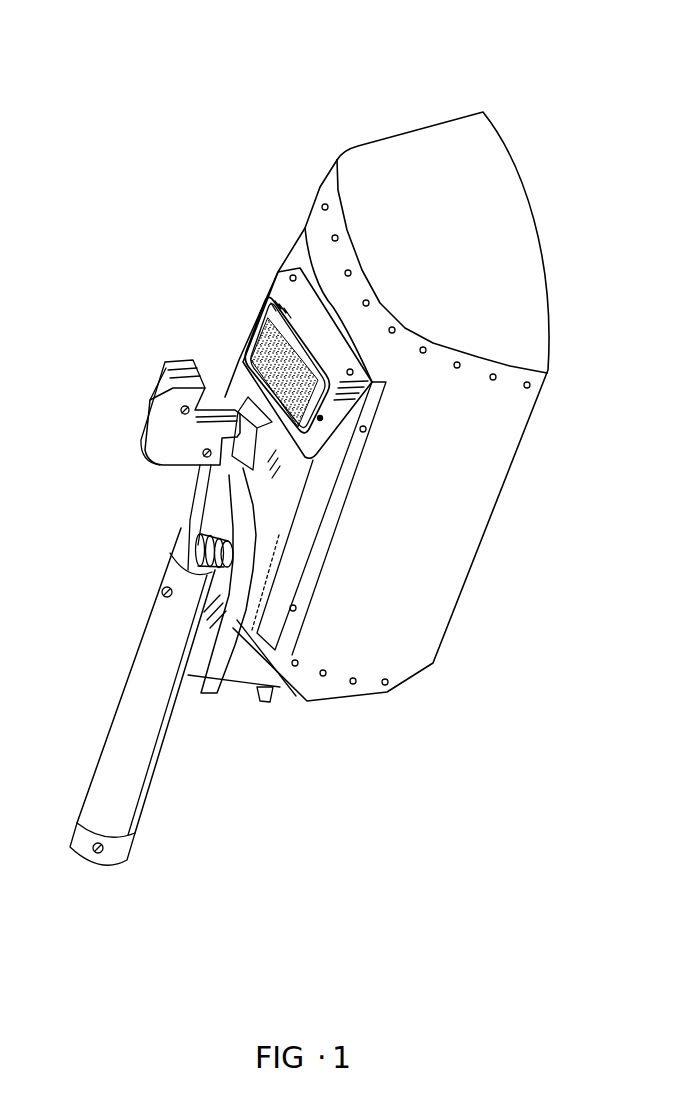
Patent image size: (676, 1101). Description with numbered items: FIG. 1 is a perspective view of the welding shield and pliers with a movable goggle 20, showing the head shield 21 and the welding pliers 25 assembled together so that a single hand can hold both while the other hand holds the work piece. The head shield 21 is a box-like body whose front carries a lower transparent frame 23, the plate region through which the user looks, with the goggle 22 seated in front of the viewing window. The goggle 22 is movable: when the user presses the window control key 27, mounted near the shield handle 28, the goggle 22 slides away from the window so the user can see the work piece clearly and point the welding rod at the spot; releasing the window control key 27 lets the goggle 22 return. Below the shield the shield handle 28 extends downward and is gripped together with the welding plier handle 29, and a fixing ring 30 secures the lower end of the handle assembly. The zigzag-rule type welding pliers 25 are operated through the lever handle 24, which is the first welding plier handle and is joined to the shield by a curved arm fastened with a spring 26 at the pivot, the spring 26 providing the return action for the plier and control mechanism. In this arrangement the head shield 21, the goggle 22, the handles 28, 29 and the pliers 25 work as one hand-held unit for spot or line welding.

The welding shield and pliers with a movable goggle 20 is at (343, 130).
The head shield 21 is at (507, 445).
The goggle 22 is at (258, 333).
The lower transparent frame 23 is at (275, 298).
The lever handle 24 is at (247, 522).
The welding pliers 25 is at (173, 425).
The spring 26 is at (198, 548).
The window control key 27 is at (277, 700).
The shield handle 28 is at (177, 710).
The welding plier handle 29 is at (142, 760).
The fixing ring 30 is at (123, 843).